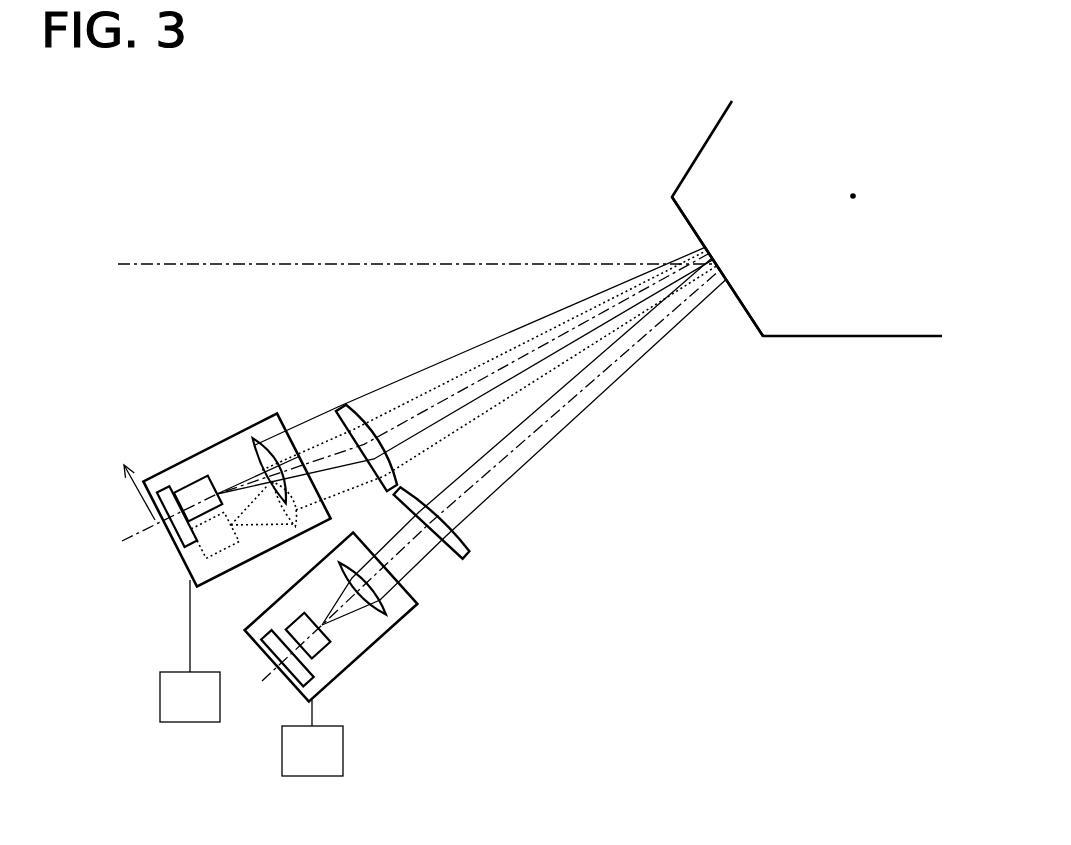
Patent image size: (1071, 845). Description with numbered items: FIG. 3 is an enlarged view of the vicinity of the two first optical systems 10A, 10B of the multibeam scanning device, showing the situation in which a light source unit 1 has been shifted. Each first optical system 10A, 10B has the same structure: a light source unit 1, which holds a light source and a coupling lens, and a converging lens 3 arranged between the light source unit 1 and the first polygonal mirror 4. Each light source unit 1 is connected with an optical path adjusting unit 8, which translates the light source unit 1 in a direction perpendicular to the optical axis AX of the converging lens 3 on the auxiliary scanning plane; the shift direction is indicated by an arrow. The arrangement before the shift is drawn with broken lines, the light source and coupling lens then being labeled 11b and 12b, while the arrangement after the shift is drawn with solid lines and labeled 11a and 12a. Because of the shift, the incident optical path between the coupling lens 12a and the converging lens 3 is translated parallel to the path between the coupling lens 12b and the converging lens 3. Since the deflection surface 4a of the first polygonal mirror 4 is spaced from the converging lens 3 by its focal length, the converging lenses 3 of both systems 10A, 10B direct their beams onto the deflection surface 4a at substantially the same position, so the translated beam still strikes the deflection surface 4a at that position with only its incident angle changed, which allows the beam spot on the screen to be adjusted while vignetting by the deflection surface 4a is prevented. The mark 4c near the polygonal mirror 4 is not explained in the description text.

The light source unit 1 is at (176, 552).
The converging lens 3 is at (394, 470).
The first polygonal mirror 4 is at (906, 314).
The deflection surface 4a is at (748, 322).
The rotation axis of polygon mirror 4c is at (853, 196).
The optical path adjusting unit 8 is at (188, 723).
The first optical system 10A is at (156, 383).
The first optical system 10B is at (461, 600).
The light source 11a is at (178, 486).
The light source 11b is at (212, 576).
The coupling lens 12a is at (252, 441).
The coupling lens 12b is at (298, 507).
The optical axis AX is at (405, 481).